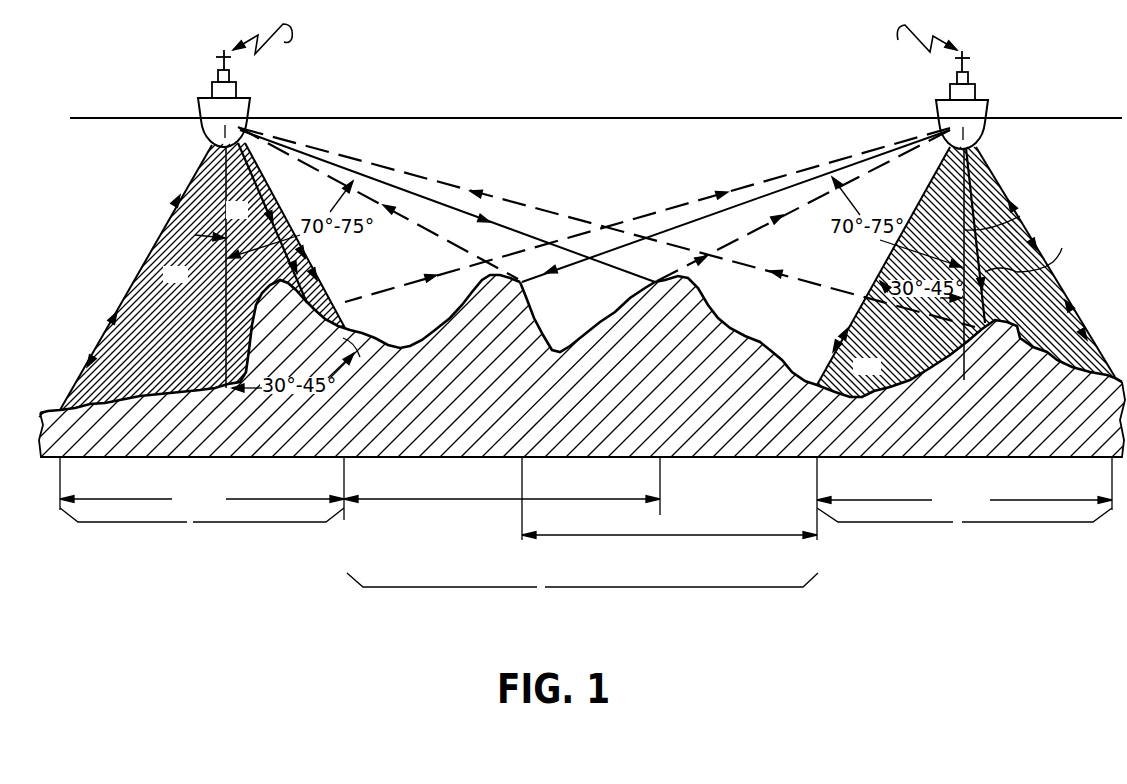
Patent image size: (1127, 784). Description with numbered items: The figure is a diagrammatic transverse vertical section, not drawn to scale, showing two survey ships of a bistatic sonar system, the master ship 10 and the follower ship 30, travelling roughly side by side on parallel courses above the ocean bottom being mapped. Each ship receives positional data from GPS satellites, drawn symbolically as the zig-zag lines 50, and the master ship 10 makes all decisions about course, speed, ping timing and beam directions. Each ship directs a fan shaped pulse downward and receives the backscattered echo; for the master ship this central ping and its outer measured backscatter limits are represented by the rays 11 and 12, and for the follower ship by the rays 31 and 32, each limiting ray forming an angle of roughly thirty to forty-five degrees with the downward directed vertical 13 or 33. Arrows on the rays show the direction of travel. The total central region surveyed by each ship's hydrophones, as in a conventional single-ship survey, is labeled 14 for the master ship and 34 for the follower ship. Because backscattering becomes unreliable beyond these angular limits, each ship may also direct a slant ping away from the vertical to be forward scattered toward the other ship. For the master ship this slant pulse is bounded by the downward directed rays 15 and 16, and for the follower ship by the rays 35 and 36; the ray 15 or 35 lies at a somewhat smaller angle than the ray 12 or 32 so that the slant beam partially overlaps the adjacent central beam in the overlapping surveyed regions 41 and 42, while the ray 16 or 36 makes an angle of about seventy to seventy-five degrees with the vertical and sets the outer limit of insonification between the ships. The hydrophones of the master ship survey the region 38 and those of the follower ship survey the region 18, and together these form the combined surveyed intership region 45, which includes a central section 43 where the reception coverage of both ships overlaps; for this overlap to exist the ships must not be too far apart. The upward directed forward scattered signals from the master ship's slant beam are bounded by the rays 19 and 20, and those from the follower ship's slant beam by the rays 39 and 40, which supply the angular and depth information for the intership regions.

The master survey ship 10 is at (199, 100).
The limiting ray of central beam 11 is at (99, 337).
The limiting ray of central beam 12 is at (277, 214).
The downward directed vertical 13 is at (226, 282).
The total central surveyed region 14 is at (187, 522).
The slant ping ray 15 is at (263, 202).
The slant ping ray 16 is at (532, 231).
The intership region surveyed by ship 30 18 is at (410, 335).
The forward scattered bounding ray 19 is at (778, 221).
The forward scattered bounding ray 20 is at (818, 163).
The follower survey ship 30 is at (990, 102).
The limiting ray of central beam 31 is at (996, 178).
The limiting ray of central beam 32 is at (923, 181).
The downward directed vertical 33 is at (1013, 222).
The total central surveyed region 34 is at (962, 522).
The slant ping ray 35 is at (1025, 235).
The slant ping ray 36 is at (717, 208).
The intership region surveyed by ship 10 38 is at (760, 333).
The forward scattered bounding ray 39 is at (398, 215).
The forward scattered bounding ray 40 is at (428, 178).
The overlapping surveyed region 41 is at (325, 300).
The overlapping surveyed region 42 is at (965, 272).
The central overlapping hydrophone surveyed section 43 is at (562, 348).
The combined surveyed intership region 45 is at (537, 587).
The GPS satellite signals 50 is at (922, 47).